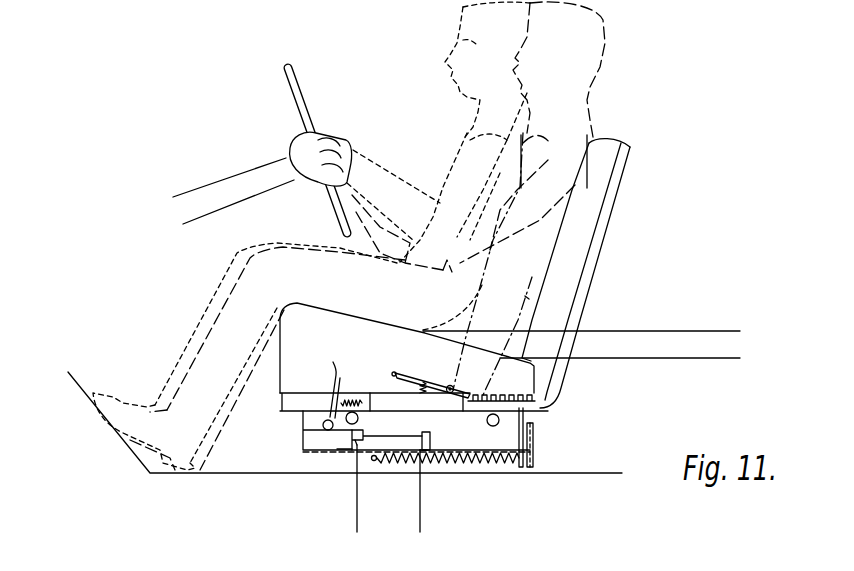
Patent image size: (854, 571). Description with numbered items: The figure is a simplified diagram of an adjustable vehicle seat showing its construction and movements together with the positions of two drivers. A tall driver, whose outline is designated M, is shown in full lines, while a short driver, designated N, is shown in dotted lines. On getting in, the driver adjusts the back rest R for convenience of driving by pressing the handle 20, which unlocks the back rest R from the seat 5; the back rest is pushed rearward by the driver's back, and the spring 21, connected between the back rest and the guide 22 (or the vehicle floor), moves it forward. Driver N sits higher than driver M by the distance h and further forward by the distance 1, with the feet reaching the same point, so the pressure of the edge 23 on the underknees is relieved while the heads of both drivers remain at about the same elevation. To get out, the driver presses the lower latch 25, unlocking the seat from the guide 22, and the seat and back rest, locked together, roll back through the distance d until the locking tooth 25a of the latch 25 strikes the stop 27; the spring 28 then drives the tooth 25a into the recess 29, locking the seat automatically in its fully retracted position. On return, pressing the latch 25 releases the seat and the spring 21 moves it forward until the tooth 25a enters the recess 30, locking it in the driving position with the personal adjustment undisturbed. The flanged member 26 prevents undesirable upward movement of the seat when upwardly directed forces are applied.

The horizontal distance between seat positions 1 is at (521, 178).
The seat base plate 5 is at (283, 408).
The handle 20 is at (398, 373).
The spring 21 is at (500, 463).
The guide 22 is at (535, 460).
The edge 23 is at (297, 303).
The handle 25 is at (324, 389).
The locking tooth 25a is at (357, 438).
The flanged member 26 is at (355, 432).
The stop 27 is at (432, 436).
The spring 28 is at (353, 393).
The recess 29 is at (424, 442).
The recess 30 is at (360, 438).
The back rest R is at (588, 279).
The distance H h is at (725, 358).
The distance d is at (420, 521).
The short driver outline n is at (462, 27).
The tall driver outline m is at (600, 43).